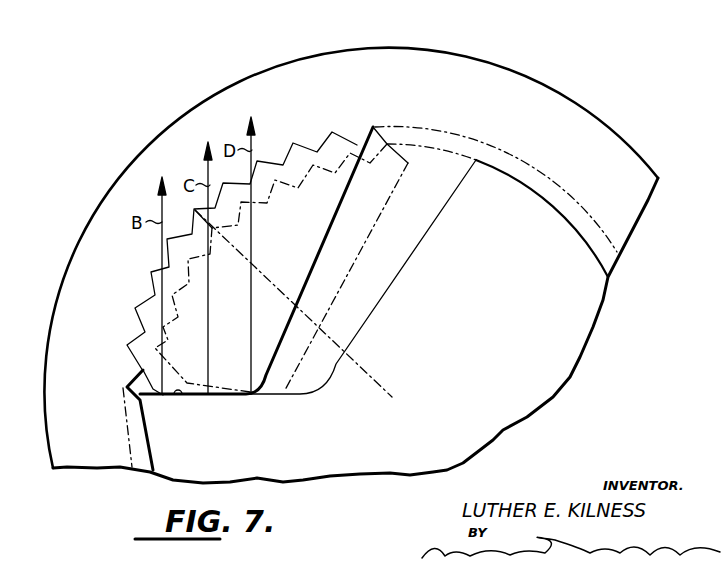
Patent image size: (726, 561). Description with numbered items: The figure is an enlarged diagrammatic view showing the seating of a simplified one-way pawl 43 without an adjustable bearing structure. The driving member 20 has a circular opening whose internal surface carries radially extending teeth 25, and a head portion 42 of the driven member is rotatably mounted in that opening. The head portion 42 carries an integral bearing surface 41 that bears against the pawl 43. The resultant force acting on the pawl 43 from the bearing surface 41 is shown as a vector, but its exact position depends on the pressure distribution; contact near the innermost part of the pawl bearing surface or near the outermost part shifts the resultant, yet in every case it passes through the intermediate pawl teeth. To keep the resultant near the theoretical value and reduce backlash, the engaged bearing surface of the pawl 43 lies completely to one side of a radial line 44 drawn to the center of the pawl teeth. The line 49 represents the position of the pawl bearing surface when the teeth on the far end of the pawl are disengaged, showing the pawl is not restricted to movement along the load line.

The driving member 20 is at (587, 133).
The teeth 25 is at (150, 295).
The integral bearing surface 41 is at (174, 396).
The head portion 42 is at (474, 402).
The one-way pawl 43 is at (298, 235).
The radial line 44 is at (358, 362).
The line representing the bearing surface position 49 is at (222, 390).